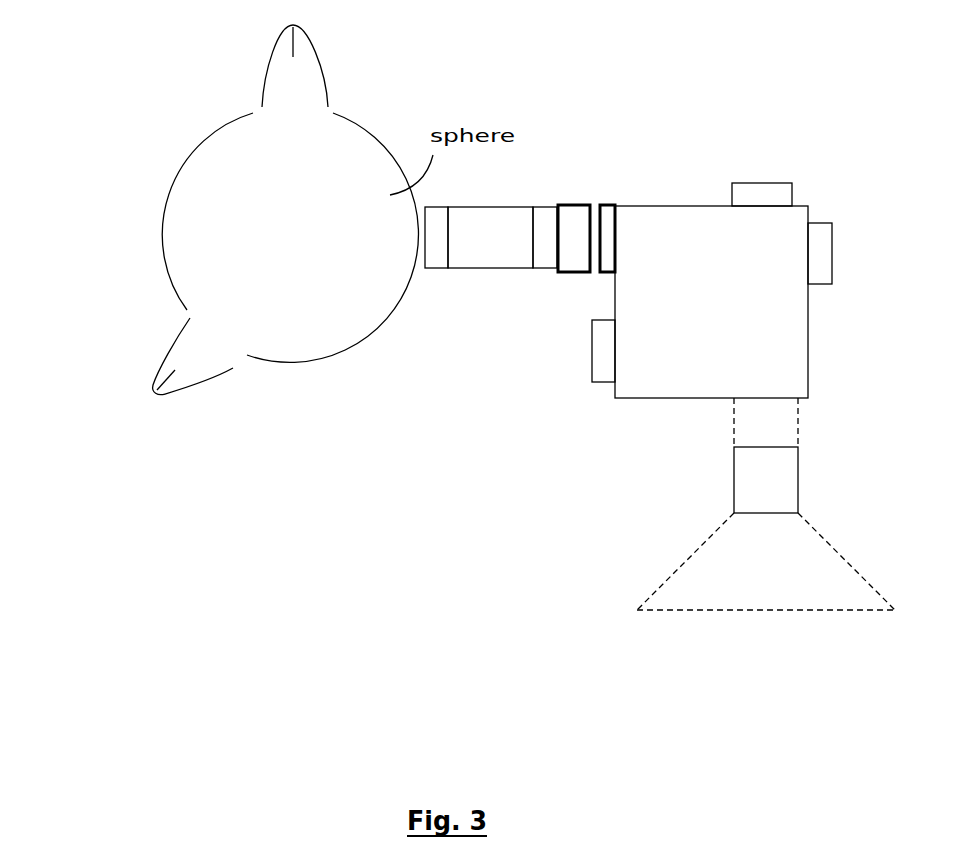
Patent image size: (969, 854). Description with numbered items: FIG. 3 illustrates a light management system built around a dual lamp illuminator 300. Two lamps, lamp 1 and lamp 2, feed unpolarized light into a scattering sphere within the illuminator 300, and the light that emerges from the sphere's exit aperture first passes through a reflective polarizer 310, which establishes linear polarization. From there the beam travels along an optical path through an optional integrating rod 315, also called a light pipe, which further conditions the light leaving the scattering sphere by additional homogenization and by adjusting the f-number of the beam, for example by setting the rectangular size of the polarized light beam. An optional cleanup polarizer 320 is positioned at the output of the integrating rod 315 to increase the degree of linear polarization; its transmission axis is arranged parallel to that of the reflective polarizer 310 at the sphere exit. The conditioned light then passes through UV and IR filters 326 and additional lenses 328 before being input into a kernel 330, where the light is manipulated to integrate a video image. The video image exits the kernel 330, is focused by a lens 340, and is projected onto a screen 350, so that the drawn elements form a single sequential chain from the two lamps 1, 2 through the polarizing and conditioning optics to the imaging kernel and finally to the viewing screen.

The lamp 1 is at (250, 90).
The lamp 2 is at (138, 367).
The illuminator 300 is at (343, 365).
The reflective polarizer 310 is at (428, 279).
The integrating rod 315 is at (502, 238).
The cleanup polarizer 320 is at (547, 207).
The UV and IR filters 326 is at (567, 273).
The additional lenses 328 is at (607, 273).
The kernel 330 is at (691, 190).
The lens 340 is at (797, 455).
The screen 350 is at (722, 564).